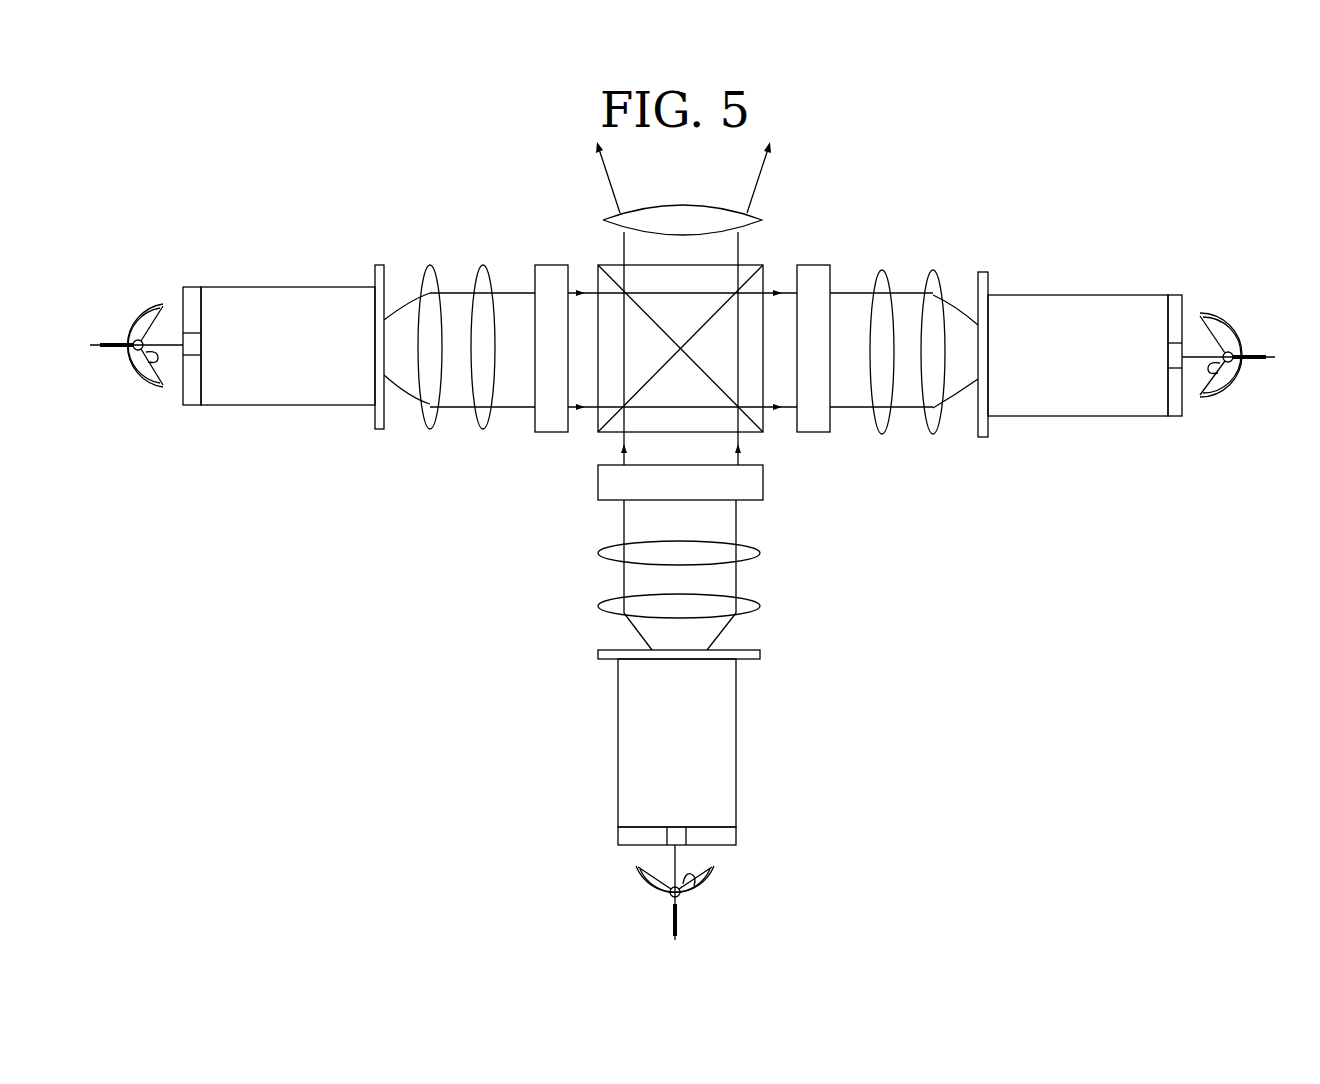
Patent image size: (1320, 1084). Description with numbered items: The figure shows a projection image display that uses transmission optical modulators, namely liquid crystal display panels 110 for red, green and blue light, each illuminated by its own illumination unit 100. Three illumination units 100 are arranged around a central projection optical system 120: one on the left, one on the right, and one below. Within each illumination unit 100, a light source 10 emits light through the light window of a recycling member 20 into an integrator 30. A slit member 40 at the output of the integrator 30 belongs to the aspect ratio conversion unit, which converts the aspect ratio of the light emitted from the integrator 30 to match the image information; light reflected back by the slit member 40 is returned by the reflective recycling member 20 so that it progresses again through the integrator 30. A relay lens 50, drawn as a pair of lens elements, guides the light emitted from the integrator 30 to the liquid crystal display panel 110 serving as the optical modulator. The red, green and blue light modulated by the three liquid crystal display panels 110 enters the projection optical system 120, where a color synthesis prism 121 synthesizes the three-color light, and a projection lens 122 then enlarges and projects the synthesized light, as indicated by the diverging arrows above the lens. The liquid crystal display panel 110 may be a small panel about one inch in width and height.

The light source 10 is at (120, 293).
The recycling member 20 is at (193, 287).
The integrator 30 is at (290, 287).
The slit member 40 is at (380, 265).
The relay lens 50 is at (430, 258).
The illumination unit 100 is at (457, 205).
The liquid crystal display panel 110 is at (553, 265).
The projection optical system 120 is at (843, 203).
The color synthesis prism 121 is at (765, 272).
The projection lens 122 is at (765, 218).